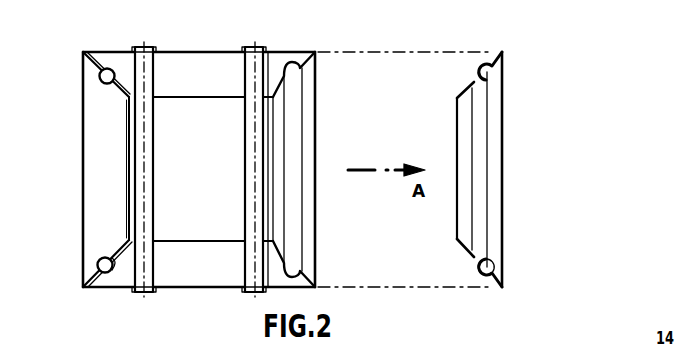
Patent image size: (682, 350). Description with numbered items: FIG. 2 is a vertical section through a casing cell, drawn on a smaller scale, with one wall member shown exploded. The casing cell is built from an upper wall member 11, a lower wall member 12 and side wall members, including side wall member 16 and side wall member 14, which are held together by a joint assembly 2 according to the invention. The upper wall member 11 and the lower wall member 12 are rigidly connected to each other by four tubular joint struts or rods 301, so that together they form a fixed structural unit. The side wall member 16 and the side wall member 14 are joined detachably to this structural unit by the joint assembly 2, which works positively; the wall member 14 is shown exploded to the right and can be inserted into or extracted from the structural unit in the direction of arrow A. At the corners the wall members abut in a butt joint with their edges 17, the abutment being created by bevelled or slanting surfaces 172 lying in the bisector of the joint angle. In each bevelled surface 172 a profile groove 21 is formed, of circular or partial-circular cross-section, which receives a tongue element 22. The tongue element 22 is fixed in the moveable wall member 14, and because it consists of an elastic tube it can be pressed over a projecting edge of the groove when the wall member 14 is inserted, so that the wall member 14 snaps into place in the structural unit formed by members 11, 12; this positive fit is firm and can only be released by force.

The upper wall member 11 is at (196, 50).
The lower wall member 12 is at (189, 288).
The side wall member 16 is at (92, 170).
The joint assembly 2 is at (104, 284).
The profile groove 21 is at (116, 284).
The tubular joint struts 301 is at (250, 140).
The bevelled surface 172 is at (298, 62).
The edge 17 is at (318, 51).
The side wall member 14 is at (500, 184).
The tongue element 22 is at (480, 272).